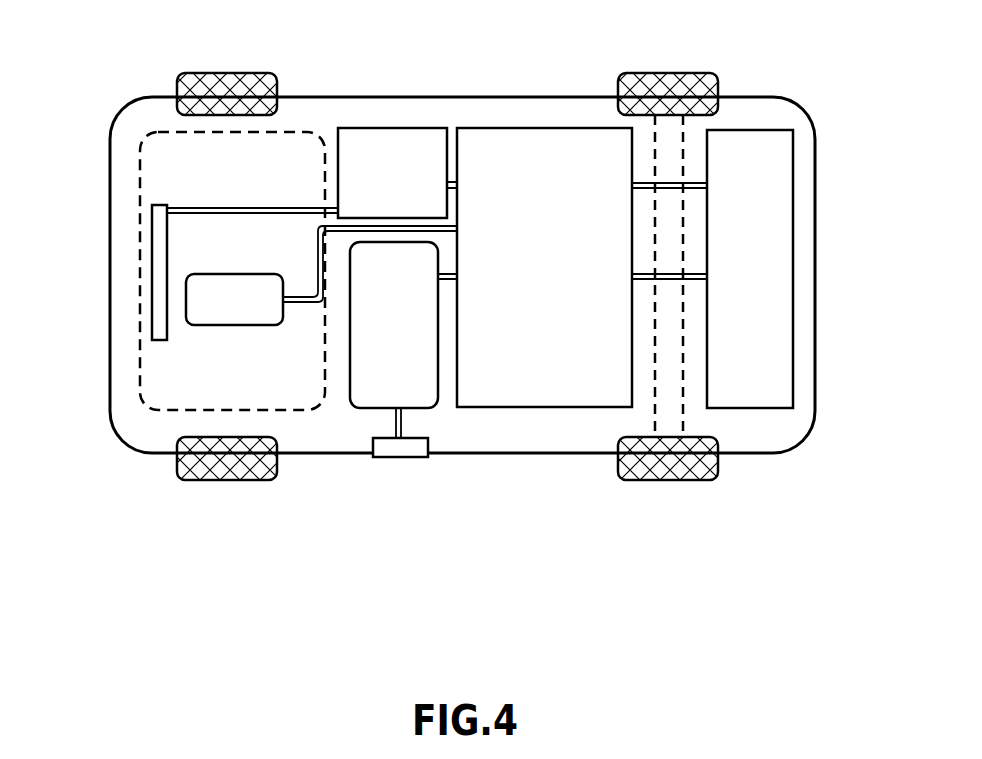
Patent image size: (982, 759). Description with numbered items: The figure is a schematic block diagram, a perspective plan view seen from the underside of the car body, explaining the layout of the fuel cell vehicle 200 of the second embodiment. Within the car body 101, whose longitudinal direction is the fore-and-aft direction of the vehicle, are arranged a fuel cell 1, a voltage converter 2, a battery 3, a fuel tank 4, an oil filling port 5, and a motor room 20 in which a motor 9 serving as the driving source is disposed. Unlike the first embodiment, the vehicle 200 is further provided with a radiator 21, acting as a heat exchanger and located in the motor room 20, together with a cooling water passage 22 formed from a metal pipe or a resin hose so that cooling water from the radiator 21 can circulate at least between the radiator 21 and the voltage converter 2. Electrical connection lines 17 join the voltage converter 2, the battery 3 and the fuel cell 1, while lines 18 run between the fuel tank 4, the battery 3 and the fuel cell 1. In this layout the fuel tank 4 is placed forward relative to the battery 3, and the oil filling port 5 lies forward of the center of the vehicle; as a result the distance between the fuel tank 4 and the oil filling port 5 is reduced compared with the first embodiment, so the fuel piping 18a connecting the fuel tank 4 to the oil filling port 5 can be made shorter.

The fuel cell vehicle 200 is at (495, 277).
The car body 101 is at (778, 453).
The motor room 20 is at (140, 165).
The radiator 21 is at (152, 227).
The motor 9 is at (186, 297).
The cooling water passage 22 is at (290, 207).
The voltage converter 2 is at (395, 128).
The electric power line 17 is at (452, 182).
The battery 3 is at (540, 128).
The fuel cell 1 is at (793, 170).
The fuel gas supply line 18 is at (690, 280).
The fuel tank 4 is at (360, 410).
The fuel piping 18a is at (402, 423).
The oil filling port 5 is at (397, 457).